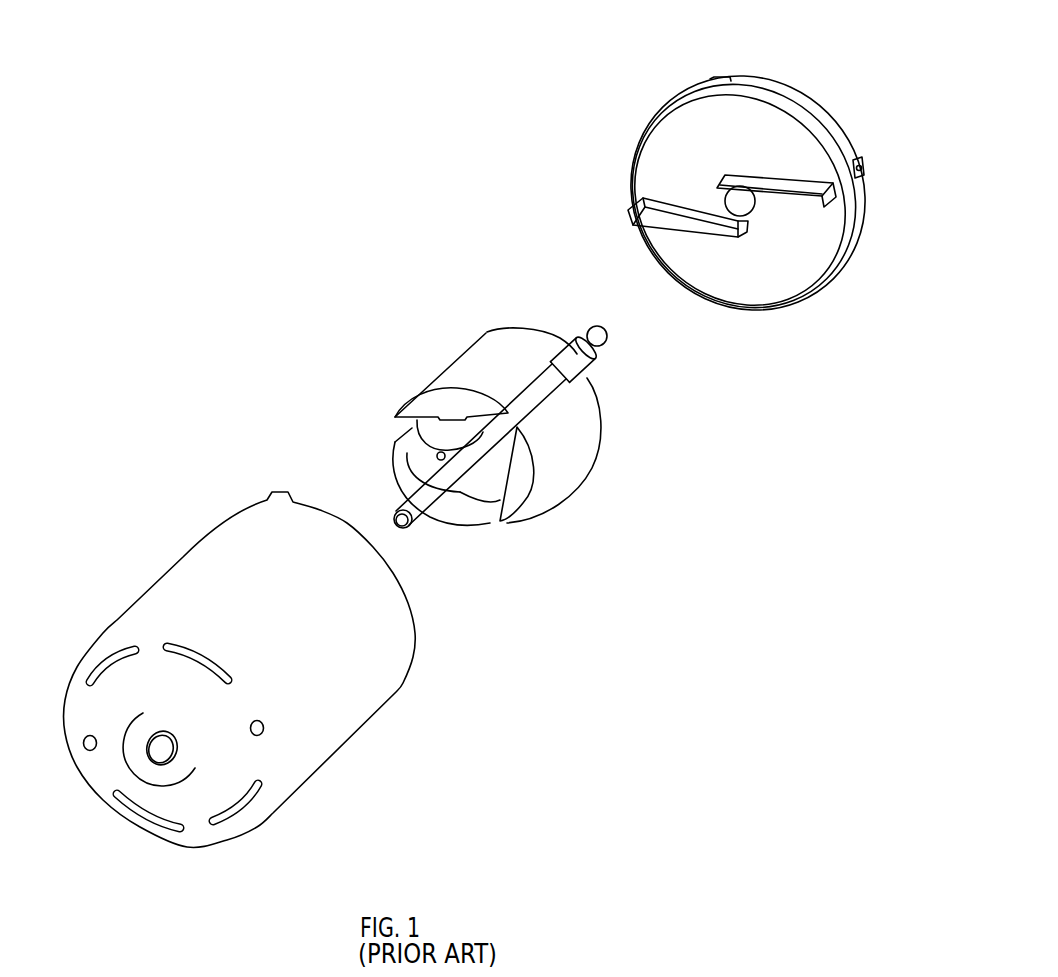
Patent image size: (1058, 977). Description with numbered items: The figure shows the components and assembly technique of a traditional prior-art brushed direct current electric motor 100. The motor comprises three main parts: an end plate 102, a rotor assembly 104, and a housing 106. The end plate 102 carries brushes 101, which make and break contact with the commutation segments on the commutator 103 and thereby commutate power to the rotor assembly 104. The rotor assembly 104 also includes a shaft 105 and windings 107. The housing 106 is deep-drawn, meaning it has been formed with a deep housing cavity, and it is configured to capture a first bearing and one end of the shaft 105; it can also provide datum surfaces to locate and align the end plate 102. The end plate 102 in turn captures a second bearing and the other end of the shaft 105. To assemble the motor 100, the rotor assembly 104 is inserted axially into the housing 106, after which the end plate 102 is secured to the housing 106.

The brushed DC electric motor 100 is at (849, 57).
The brushes 101 is at (732, 186).
The end plate 102 is at (748, 193).
The commutator 103 is at (542, 322).
The rotor assembly 104 is at (409, 342).
The shaft 105 is at (480, 488).
The housing 106 is at (240, 669).
The windings 107 is at (488, 473).